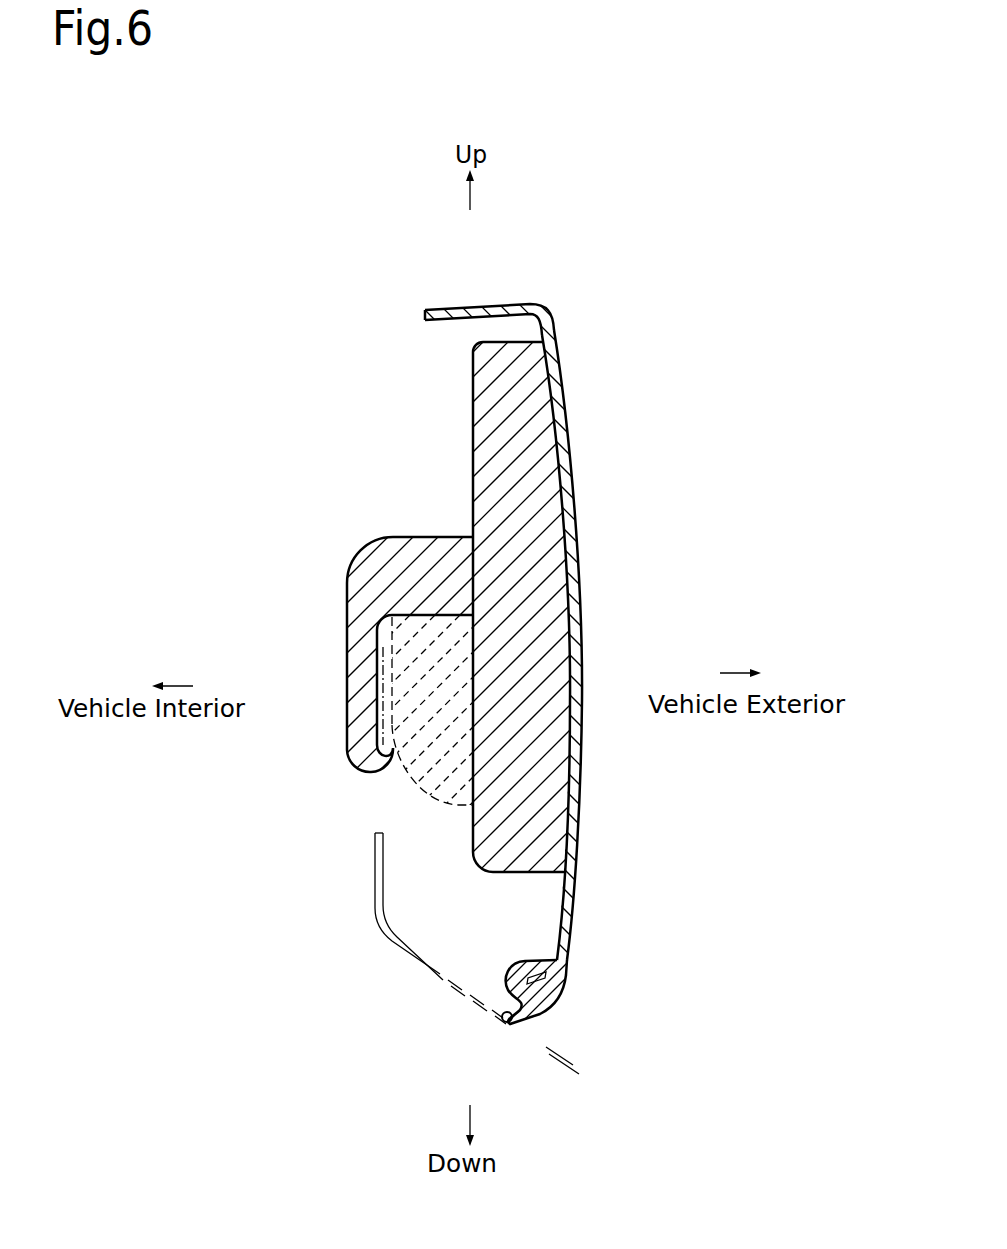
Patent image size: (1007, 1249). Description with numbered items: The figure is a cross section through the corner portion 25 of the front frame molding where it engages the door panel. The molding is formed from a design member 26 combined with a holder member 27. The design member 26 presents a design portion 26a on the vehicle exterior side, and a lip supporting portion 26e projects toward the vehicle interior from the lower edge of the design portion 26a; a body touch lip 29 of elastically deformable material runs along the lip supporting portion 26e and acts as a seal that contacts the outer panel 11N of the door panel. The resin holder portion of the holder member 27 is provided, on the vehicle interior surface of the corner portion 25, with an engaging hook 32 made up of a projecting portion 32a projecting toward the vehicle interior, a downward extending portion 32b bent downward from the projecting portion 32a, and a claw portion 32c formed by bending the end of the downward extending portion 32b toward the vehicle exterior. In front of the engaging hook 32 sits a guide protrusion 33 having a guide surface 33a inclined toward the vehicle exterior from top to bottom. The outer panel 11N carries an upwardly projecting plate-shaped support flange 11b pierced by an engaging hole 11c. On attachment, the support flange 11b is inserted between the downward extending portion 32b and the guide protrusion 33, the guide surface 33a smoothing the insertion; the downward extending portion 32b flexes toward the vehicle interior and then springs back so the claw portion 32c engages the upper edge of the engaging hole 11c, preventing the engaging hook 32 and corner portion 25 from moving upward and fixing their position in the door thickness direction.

The corner portion 25 is at (503, 662).
The design member 26 is at (517, 312).
The design portion 26a is at (577, 545).
The lip supporting portion 26e is at (540, 967).
The body touch lip 29 is at (547, 1008).
The holder member 27 is at (495, 412).
The engaging hook 32 is at (345, 614).
The projecting portion 32a is at (412, 558).
The downward extending portion 32b is at (355, 673).
The claw portion 32c is at (352, 726).
The guide protrusion 33 is at (553, 450).
The guide surface 33a is at (410, 782).
The support flange 11b is at (479, 860).
The engaging hole 11c is at (378, 833).
The outer panel 11N is at (565, 1053).